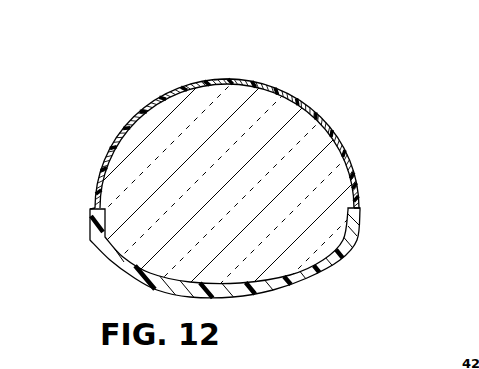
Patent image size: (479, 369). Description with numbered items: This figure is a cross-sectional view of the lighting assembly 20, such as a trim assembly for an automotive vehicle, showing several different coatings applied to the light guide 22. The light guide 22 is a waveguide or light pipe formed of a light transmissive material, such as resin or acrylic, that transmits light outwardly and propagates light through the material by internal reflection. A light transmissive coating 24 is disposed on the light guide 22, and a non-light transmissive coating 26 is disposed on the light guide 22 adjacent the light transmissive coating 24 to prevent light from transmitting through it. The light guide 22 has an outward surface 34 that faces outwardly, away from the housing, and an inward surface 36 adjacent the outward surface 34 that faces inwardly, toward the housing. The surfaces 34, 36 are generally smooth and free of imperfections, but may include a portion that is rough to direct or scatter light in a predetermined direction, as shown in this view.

The lighting assembly 20 is at (239, 169).
The light guide 22 is at (353, 187).
The light transmissive coating 24 is at (125, 133).
The non-light transmissive coating 26 is at (226, 80).
The outward surface 34 is at (327, 128).
The inward surface 36 is at (347, 258).